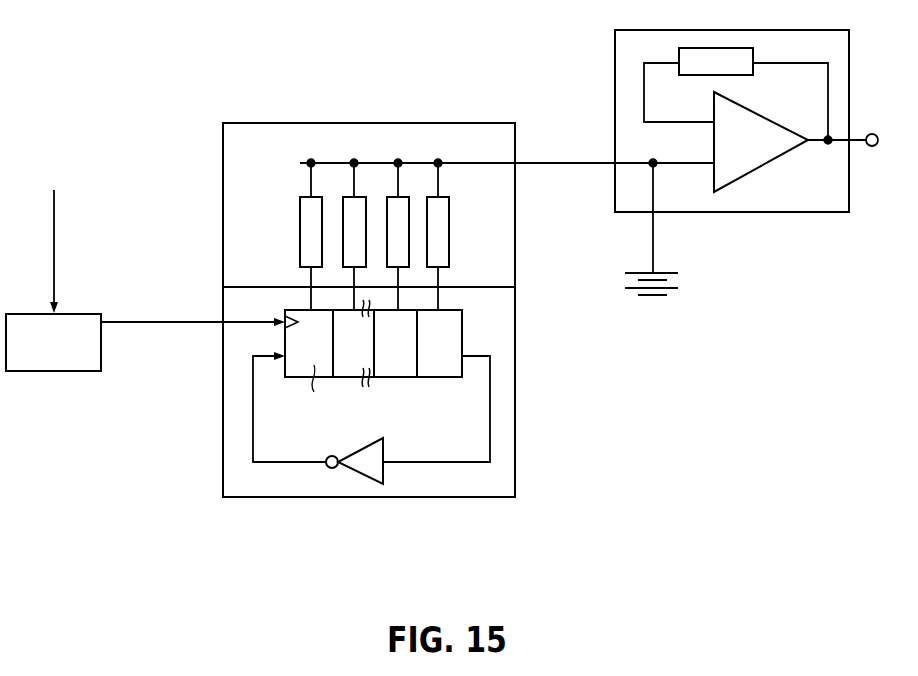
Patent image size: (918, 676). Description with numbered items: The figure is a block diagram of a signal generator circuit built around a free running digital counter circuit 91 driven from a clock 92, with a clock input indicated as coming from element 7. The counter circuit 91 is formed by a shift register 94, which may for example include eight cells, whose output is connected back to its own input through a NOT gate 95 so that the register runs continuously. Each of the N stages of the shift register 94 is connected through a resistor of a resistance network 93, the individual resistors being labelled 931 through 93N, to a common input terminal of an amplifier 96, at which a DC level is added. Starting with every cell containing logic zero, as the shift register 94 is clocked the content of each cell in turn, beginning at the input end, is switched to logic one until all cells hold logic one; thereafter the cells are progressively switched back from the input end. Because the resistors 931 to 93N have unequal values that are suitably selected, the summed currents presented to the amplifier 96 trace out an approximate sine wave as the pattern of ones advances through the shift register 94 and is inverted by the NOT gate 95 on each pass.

The signal from element 7 is at (53, 235).
The free running digital counter circuit 91 is at (467, 497).
The clock 92 is at (50, 372).
The resistance network 93 is at (434, 234).
The resistor 931 is at (300, 224).
The resistor 93N is at (449, 228).
The shift register 94 is at (463, 330).
The NOT gate 95 is at (360, 477).
The amplifier 96 is at (795, 213).